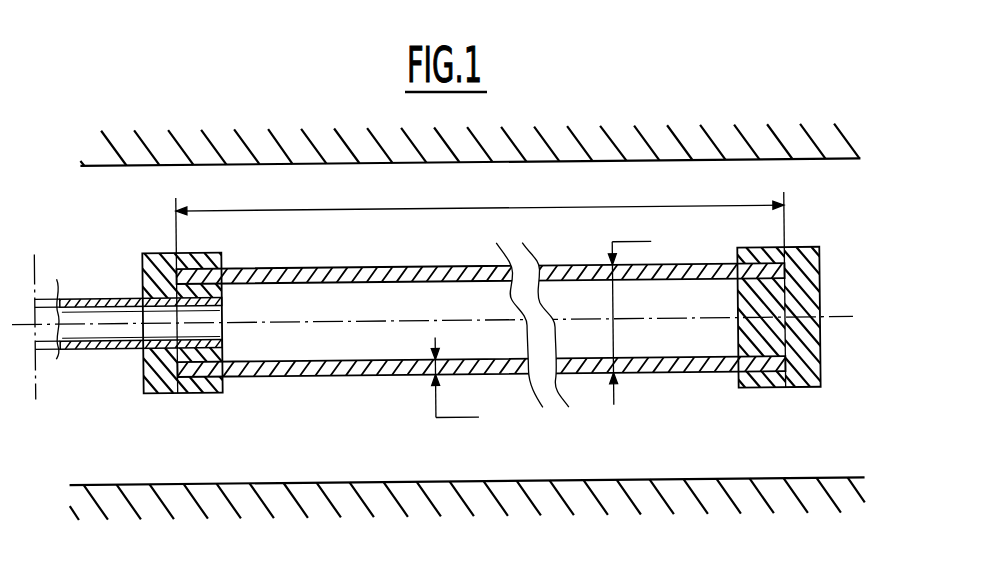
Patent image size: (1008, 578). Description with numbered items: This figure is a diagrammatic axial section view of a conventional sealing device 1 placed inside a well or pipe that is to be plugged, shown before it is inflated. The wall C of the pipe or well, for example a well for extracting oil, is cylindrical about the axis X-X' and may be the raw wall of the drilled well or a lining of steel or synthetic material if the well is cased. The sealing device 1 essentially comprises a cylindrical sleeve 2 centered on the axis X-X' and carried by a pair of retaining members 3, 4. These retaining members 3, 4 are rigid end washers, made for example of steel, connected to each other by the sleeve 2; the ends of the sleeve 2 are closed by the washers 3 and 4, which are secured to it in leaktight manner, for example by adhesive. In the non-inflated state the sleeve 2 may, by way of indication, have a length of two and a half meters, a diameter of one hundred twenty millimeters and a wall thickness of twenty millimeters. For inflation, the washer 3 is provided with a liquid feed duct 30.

The sealing device 1 is at (257, 399).
The cylindrical sleeve 2 is at (400, 270).
The retaining member 3 is at (143, 275).
The retaining member 4 is at (820, 275).
The liquid feed duct 30 is at (103, 350).
The wall C is at (700, 484).